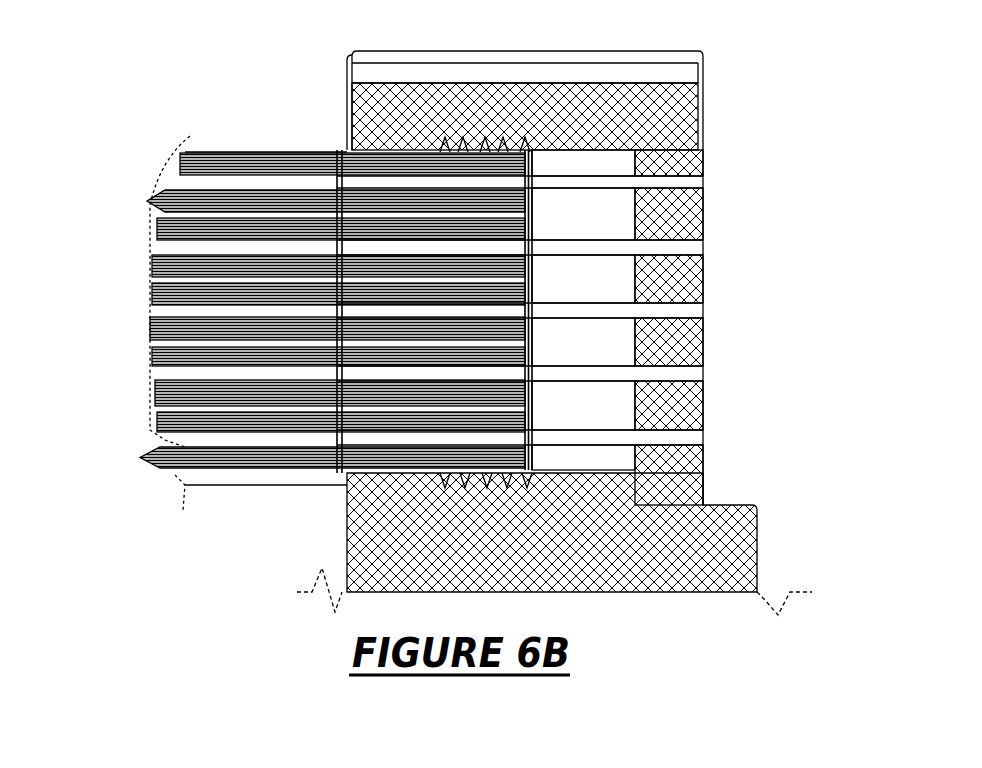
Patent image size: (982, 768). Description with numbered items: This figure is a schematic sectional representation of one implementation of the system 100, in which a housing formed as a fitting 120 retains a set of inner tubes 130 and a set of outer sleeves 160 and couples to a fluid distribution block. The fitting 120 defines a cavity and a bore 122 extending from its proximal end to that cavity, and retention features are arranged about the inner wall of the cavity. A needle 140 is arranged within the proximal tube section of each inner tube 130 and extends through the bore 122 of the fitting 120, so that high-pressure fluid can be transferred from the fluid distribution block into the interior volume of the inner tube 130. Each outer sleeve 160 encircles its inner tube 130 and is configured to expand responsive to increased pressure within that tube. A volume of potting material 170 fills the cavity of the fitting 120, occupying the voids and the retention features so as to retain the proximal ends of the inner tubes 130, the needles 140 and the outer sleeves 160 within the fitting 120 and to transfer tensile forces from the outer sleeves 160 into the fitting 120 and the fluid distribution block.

The system 100 is at (138, 69).
The fitting 120 is at (703, 103).
The bore 122 is at (489, 151).
The inner tube 130 is at (157, 245).
The needle 140 is at (703, 178).
The outer sleeve 160 is at (245, 152).
The volume of potting material 170 is at (725, 507).